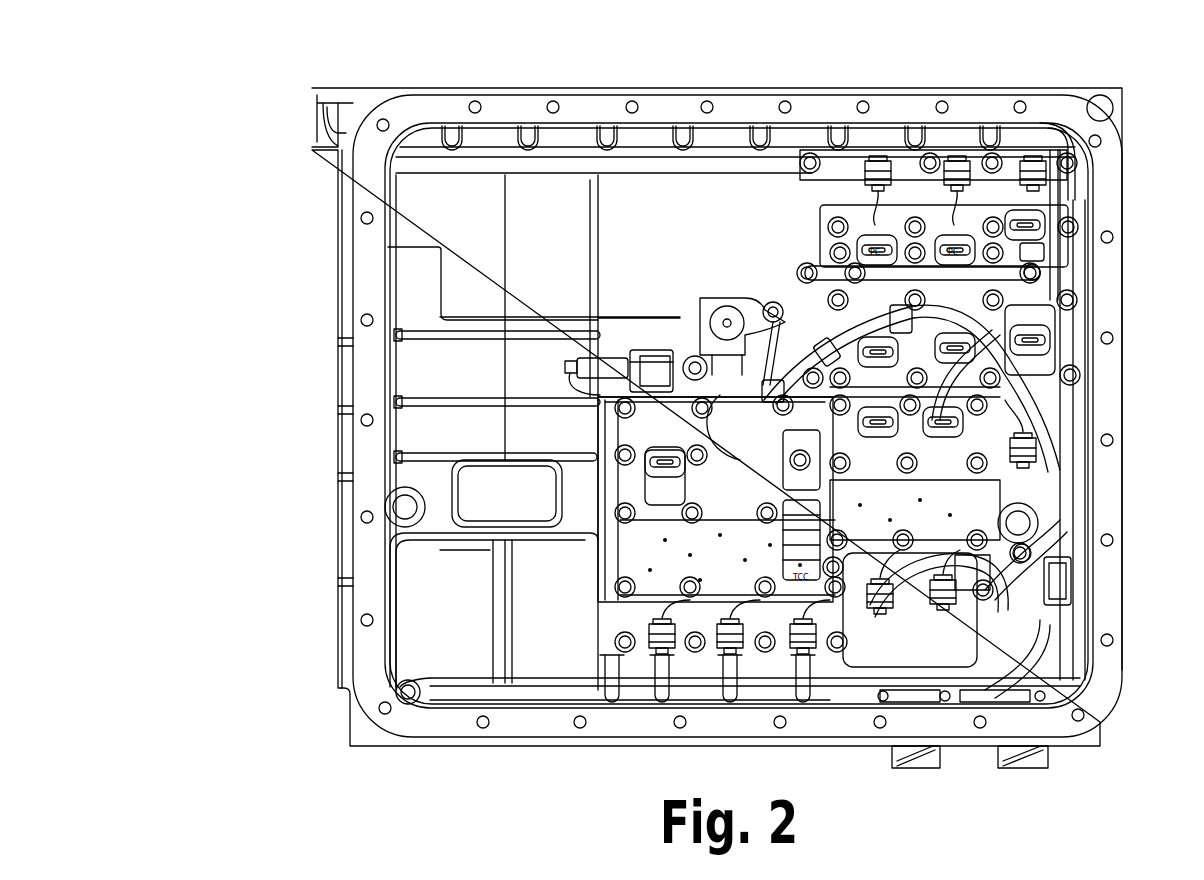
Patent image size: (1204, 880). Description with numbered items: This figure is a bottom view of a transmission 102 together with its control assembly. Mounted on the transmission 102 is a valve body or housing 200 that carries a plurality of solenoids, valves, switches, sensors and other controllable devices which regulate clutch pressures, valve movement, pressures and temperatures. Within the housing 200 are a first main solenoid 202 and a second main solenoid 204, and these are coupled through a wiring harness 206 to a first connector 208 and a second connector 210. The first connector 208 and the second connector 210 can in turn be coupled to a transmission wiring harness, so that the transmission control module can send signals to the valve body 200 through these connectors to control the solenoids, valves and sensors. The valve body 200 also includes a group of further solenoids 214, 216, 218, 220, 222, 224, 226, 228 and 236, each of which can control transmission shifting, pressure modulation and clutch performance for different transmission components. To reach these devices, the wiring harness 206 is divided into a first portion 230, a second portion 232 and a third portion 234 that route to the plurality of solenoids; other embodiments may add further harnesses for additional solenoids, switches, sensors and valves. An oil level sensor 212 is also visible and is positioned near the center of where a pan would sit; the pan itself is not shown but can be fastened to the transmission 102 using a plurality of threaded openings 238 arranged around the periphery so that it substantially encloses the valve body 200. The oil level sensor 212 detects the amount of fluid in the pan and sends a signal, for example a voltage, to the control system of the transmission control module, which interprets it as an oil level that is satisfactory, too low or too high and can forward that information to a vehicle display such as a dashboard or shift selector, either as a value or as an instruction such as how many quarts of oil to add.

The transmission 102 is at (266, 209).
The valve body 200 is at (607, 550).
The first main solenoid 202 is at (619, 366).
The second main solenoid 204 is at (650, 372).
The wiring harness 206 is at (1058, 573).
The first connector 208 is at (908, 765).
The second connector 210 is at (1045, 768).
The oil level sensor 212 is at (727, 320).
The solenoid 214 is at (885, 612).
The solenoid 216 is at (705, 648).
The solenoid 218 is at (953, 600).
The solenoid 220 is at (863, 173).
The solenoid 222 is at (963, 175).
The solenoid 224 is at (653, 650).
The solenoid 226 is at (793, 645).
The solenoid 228 is at (1050, 150).
The first portion 230 is at (1052, 262).
The second portion 232 is at (1003, 507).
The third portion 234 is at (843, 337).
The solenoid 236 is at (1027, 453).
The threaded openings 238 is at (478, 101).